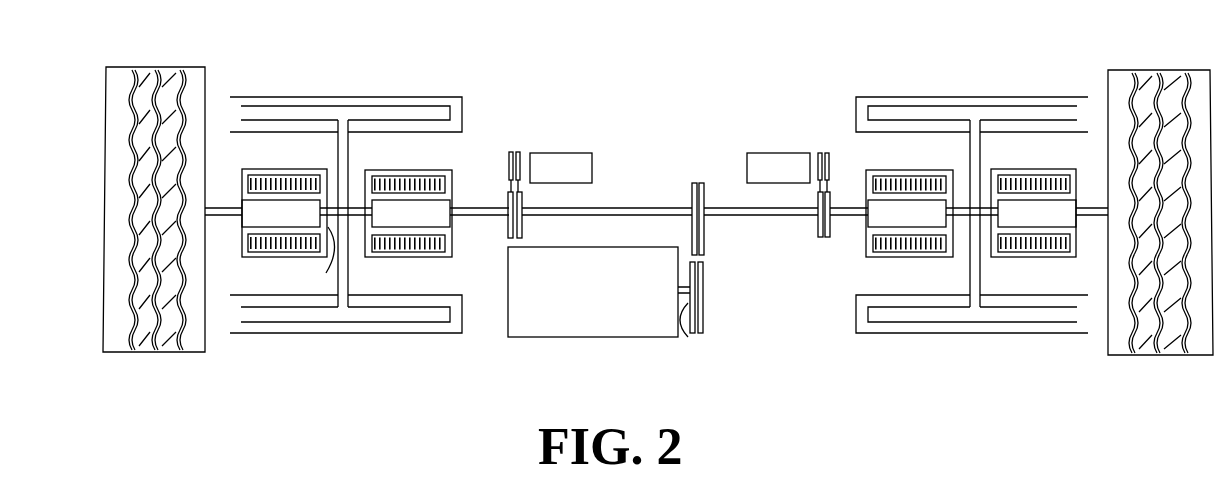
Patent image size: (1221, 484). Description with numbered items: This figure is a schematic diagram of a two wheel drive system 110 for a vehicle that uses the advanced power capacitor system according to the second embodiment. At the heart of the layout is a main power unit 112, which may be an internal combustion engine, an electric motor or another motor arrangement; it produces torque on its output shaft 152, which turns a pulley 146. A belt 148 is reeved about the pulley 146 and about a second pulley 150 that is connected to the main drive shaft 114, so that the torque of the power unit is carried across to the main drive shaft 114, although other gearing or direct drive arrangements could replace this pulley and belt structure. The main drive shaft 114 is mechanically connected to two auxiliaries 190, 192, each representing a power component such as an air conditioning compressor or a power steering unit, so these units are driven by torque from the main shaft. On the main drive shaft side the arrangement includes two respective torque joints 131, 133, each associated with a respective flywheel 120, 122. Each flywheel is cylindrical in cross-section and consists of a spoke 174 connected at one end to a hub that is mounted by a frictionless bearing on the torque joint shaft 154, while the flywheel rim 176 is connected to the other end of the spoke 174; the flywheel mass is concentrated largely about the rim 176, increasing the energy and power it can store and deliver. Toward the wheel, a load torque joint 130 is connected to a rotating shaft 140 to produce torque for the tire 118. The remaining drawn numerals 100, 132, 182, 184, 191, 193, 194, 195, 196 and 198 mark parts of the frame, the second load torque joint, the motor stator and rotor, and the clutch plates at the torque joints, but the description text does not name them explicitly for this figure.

The frame 100 is at (346, 184).
The two wheel drive system 110 is at (637, 97).
The main power unit 112 is at (578, 340).
The main drive shaft 114 is at (608, 203).
The tire 118 is at (201, 66).
The flywheel 120 is at (306, 96).
The flywheel 122 is at (1030, 96).
The load torque joint 130 is at (270, 215).
The torque joint 131 is at (428, 172).
The electric motor 132 is at (1023, 168).
The torque joint 133 is at (897, 170).
The rotating shaft 140 is at (228, 197).
The pulley 146 is at (705, 288).
The belt 148 is at (702, 258).
The second pulley 150 is at (697, 183).
The output shaft 152 is at (689, 335).
The torque joint shaft 154 is at (333, 262).
The spoke 174 is at (350, 276).
The flywheel rim 176 is at (403, 106).
The stator 182 is at (255, 252).
The rotor 184 is at (250, 211).
The auxiliary 190 is at (548, 152).
The clutch 191 is at (510, 152).
The auxiliary 192 is at (753, 152).
The clutch plate 193 is at (506, 240).
The clutch 194 is at (828, 152).
The clutch plate 195 is at (508, 190).
The clutch plate 196 is at (825, 238).
The clutch plate 198 is at (832, 188).